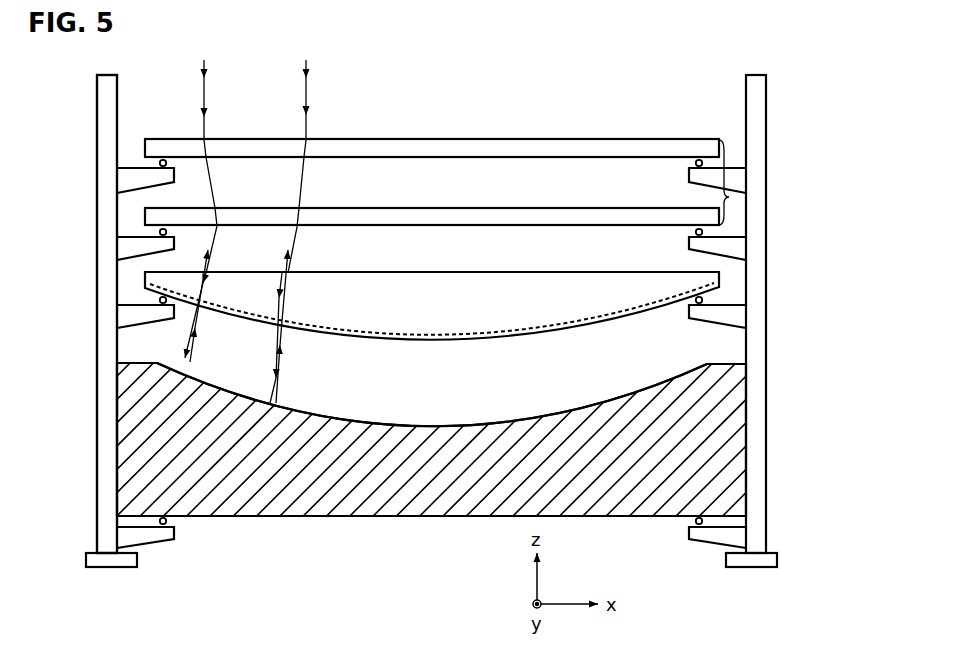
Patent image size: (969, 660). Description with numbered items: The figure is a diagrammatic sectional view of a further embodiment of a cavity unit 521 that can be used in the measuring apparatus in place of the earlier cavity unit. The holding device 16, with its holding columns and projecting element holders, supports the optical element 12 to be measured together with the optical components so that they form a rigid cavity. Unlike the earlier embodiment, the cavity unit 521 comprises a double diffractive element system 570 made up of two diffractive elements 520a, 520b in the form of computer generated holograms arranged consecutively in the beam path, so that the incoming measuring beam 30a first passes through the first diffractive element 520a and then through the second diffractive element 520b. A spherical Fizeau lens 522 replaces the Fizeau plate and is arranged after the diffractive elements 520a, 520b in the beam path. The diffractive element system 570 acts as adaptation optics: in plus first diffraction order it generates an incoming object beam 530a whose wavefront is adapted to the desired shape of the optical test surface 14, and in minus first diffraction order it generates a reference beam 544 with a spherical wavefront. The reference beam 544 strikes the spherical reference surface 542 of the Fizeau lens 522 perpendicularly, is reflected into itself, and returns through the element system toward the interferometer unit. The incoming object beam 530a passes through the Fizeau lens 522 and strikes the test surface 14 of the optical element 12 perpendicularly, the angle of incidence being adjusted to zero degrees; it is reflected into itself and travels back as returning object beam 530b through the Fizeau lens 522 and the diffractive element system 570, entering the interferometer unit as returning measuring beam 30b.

The optical element 12 is at (398, 505).
The test surface 14 is at (476, 423).
The holding device 16 is at (97, 95).
The incoming measuring beam 30a is at (203, 115).
The returning measuring beam 30b is at (203, 78).
The first diffractive element 520a is at (498, 148).
The second diffractive element 520b is at (498, 217).
The cavity unit 521 is at (94, 311).
The spherical Fizeau lens 522 is at (585, 283).
The incoming object beam 530a is at (277, 380).
The returning object beam 530b is at (279, 345).
The spherical reference surface 542 is at (580, 331).
The reference beam 544 is at (283, 279).
The diffractive element system 570 is at (729, 197).